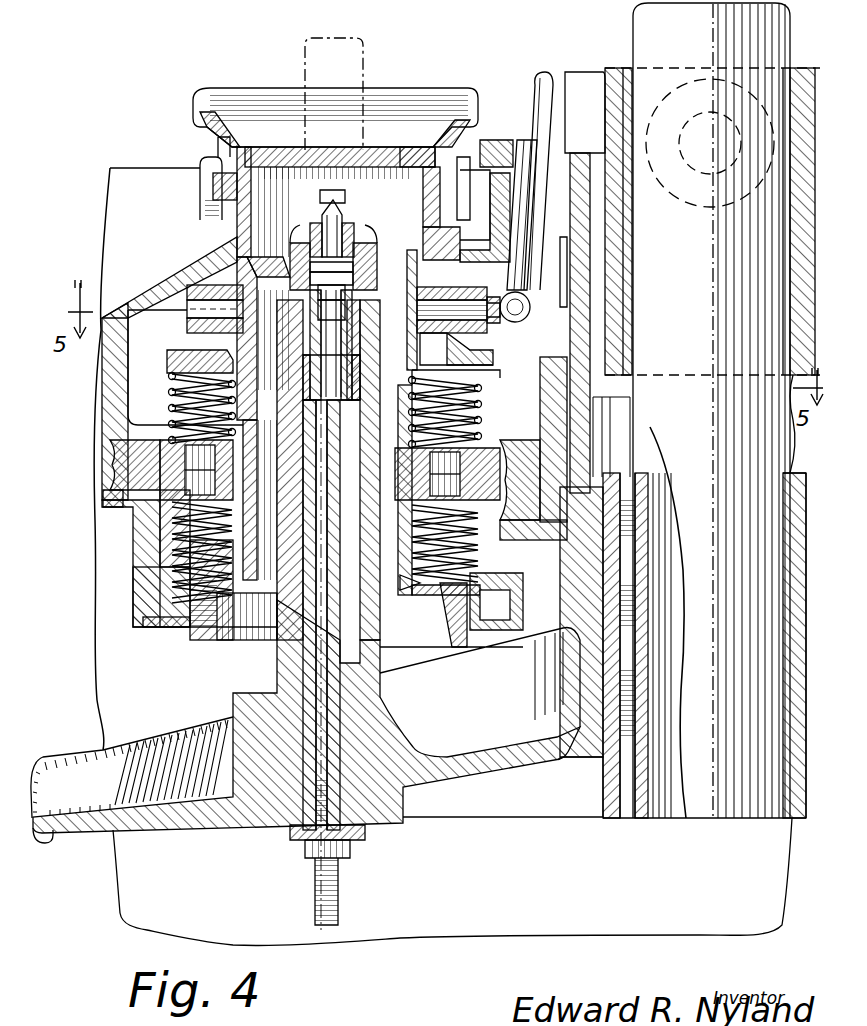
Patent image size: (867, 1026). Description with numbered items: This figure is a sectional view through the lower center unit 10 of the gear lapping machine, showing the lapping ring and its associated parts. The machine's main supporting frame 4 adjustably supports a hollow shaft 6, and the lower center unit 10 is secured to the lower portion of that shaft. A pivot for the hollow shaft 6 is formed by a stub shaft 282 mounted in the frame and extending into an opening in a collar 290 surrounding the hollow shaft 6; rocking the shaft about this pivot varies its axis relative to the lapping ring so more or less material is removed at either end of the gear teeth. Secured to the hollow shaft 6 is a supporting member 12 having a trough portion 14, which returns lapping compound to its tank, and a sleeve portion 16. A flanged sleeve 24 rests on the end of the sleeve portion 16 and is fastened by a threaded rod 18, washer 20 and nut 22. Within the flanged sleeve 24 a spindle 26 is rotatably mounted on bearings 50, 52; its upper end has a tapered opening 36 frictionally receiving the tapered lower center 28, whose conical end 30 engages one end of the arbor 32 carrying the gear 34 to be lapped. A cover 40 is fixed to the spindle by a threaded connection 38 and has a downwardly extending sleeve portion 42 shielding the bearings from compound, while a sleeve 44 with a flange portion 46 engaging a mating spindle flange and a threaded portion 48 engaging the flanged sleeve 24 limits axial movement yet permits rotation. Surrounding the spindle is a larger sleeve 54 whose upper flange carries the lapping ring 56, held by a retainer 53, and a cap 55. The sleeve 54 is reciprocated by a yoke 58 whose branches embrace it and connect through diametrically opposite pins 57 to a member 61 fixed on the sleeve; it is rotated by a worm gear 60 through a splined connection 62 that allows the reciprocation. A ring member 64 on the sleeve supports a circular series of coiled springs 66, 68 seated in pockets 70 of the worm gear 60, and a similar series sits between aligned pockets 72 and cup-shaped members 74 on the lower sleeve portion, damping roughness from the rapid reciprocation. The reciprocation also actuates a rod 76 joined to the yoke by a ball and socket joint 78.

The main supporting frame 4 is at (143, 873).
The hollow shaft 6 is at (642, 27).
The lower center unit 10 is at (270, 682).
The supporting member 12 is at (607, 787).
The trough portion 14 is at (105, 836).
The sleeve portion 16 is at (283, 637).
The threaded rod 18 is at (300, 652).
The washer 20 is at (290, 833).
The nut 22 is at (307, 850).
The flanged sleeve 24 is at (338, 364).
The spindle 26 is at (331, 345).
The lower center 28 is at (347, 216).
The conical end 30 is at (343, 197).
The arbor 32 is at (330, 70).
The gear 34 is at (368, 147).
The tapered opening 36 is at (355, 262).
The threaded connection 38 is at (352, 235).
The cover 40 is at (378, 248).
The sleeve portion 42 is at (287, 257).
The sleeve 44 is at (357, 282).
The flange portion 46 is at (357, 268).
The threaded portion 48 is at (348, 296).
The bearing 50 is at (348, 312).
The bearing 52 is at (352, 374).
The retainer 53 is at (210, 128).
The larger sleeve 54 is at (429, 262).
The cap 55 is at (204, 193).
The lapping ring 56 is at (420, 157).
The pins 57 is at (453, 318).
The yoke 58 is at (490, 320).
The worm gear 60 is at (133, 463).
The member 61 is at (435, 289).
The splined connection 62 is at (420, 447).
The ring member 64 is at (472, 367).
The coiled springs 66 is at (183, 387).
The coiled springs 68 is at (183, 411).
The pockets 70 is at (482, 443).
The pockets 72 is at (417, 470).
The cup-shaped members 74 is at (507, 570).
The rod 76 is at (523, 223).
The ball and socket joint 78 is at (525, 299).
The stub shaft 282 is at (697, 113).
The collar 290 is at (615, 277).